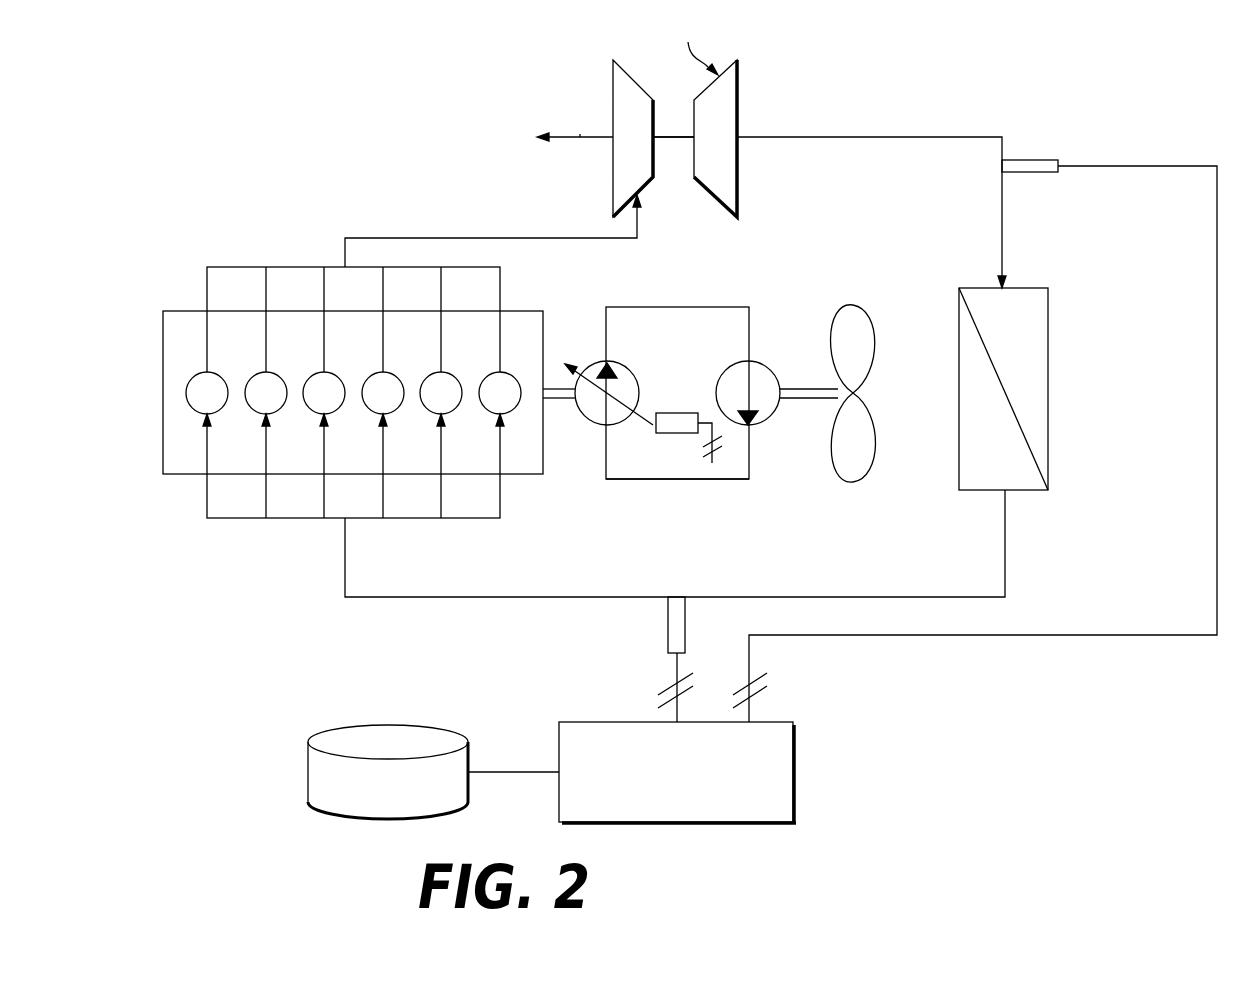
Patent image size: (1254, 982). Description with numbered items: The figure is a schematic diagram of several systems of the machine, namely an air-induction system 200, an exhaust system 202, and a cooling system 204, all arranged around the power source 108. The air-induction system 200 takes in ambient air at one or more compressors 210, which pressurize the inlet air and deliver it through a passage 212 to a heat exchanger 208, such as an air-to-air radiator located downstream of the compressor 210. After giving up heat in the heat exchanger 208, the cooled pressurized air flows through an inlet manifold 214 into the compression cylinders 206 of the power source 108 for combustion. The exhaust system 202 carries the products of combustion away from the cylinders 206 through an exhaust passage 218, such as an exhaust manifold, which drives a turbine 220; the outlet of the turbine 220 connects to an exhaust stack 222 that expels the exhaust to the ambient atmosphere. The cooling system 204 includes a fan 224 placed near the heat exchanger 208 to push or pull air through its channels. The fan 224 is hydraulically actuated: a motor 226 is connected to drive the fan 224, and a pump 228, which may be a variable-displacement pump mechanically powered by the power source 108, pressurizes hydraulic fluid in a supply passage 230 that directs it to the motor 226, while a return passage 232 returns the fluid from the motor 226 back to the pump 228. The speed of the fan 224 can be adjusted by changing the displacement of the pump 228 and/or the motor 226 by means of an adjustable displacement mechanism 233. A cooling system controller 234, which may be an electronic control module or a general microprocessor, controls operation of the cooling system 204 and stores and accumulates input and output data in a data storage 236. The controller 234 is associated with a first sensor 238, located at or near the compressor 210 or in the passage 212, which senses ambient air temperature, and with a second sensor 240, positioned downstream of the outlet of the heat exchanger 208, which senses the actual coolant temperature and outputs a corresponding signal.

The power source 108 is at (195, 181).
The air-induction system 200 is at (980, 95).
The exhaust system 202 is at (434, 98).
The cooling system 204 is at (890, 688).
The compression cylinders 206 is at (259, 374).
The heat exchanger 208 is at (1030, 288).
The compressor 210 is at (695, 117).
The passage 212 is at (858, 137).
The inlet manifold 214 is at (237, 520).
The exhaust passage 218 is at (393, 236).
The turbine 220 is at (545, 138).
The exhaust stack 222 is at (580, 133).
The fan 224 is at (845, 305).
The motor 226 is at (760, 362).
The pump 228 is at (606, 362).
The supply passage 230 is at (660, 307).
The return passage 232 is at (727, 480).
The adjustable displacement mechanism 233 is at (680, 412).
The cooling system controller 234 is at (632, 773).
The data storage 236 is at (388, 772).
The first sensor 238 is at (1035, 160).
The second sensor 240 is at (668, 618).